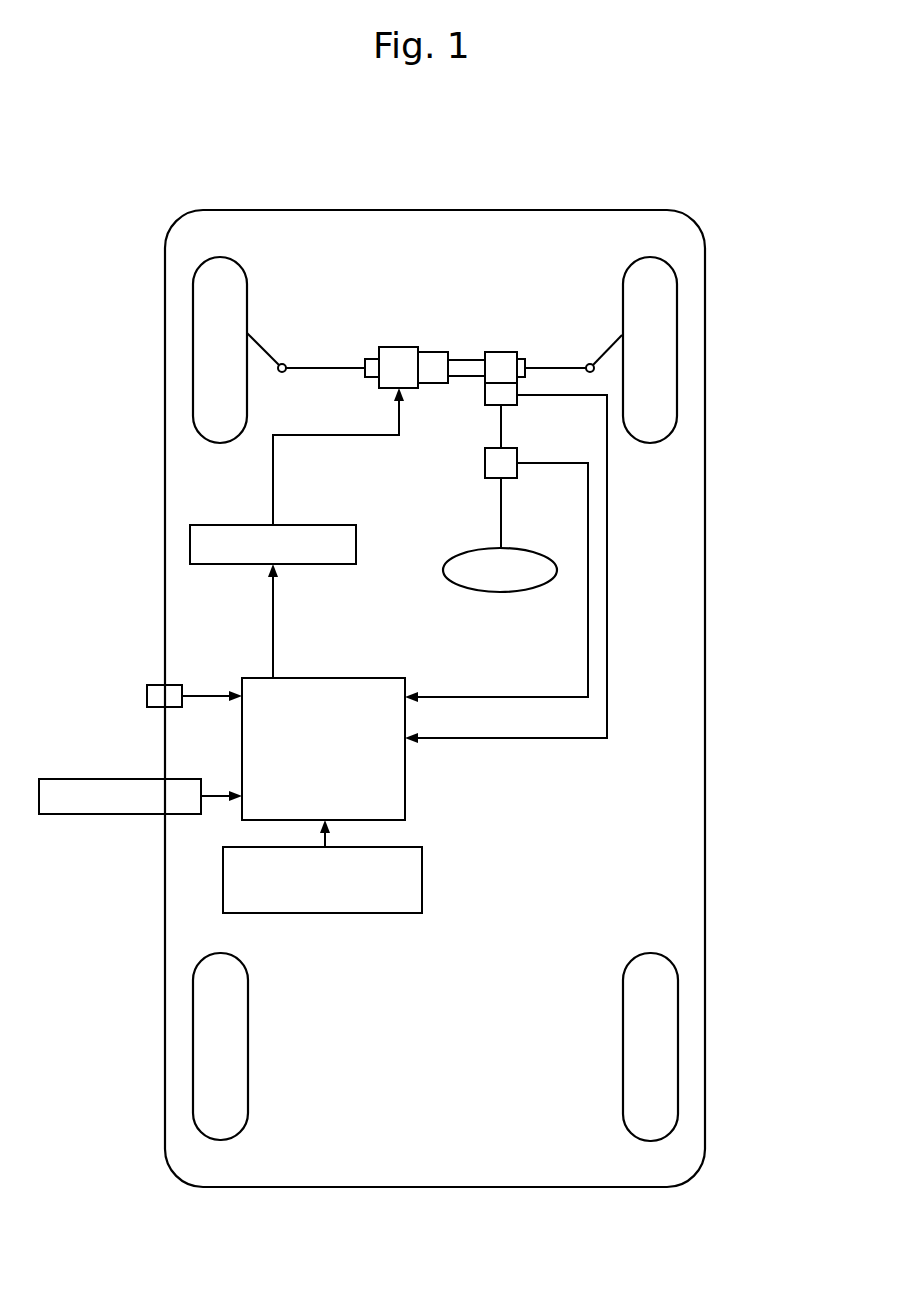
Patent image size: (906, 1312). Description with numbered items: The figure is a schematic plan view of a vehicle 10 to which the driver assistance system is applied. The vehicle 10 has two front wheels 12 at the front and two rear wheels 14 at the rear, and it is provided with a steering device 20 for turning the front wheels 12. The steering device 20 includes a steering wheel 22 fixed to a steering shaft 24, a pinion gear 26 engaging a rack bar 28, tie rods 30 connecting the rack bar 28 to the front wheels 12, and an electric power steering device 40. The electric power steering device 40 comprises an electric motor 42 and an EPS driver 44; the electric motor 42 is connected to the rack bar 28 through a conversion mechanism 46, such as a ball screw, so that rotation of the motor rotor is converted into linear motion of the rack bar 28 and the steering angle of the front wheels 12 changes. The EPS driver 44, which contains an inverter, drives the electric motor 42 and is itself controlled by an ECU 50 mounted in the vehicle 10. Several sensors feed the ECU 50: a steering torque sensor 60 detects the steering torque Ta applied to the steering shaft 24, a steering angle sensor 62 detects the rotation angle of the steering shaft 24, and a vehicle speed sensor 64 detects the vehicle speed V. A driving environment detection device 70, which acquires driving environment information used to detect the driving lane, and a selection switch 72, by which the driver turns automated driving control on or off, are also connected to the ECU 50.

The vehicle 10 is at (704, 197).
The front wheels 12 is at (192, 349).
The rear wheels 14 is at (193, 1042).
The steering device 20 is at (494, 275).
The steering wheel 22 is at (443, 570).
The steering shaft 24 is at (502, 527).
The pinion gear 26 is at (497, 351).
The rack bar 28 is at (550, 367).
The tie rods 30 is at (263, 347).
The electric power steering device 40 is at (389, 280).
The electric motor 42 is at (398, 347).
The EPS driver 44 is at (311, 525).
The conversion mechanism 46 is at (437, 352).
The ECU 50 is at (254, 678).
The steering torque sensor 60 is at (485, 394).
The steering angle sensor 62 is at (485, 461).
The vehicle speed sensor 64 is at (147, 693).
The driving environment detection device 70 is at (422, 870).
The selection switch 72 is at (123, 815).